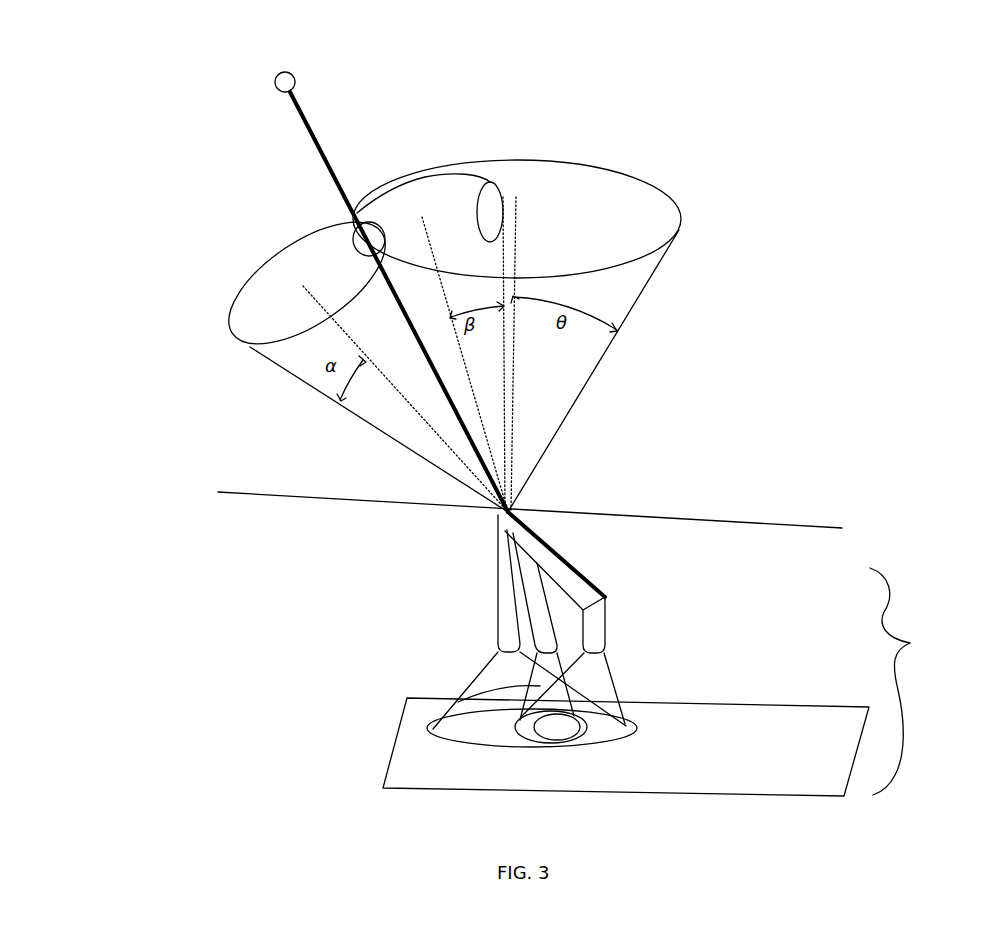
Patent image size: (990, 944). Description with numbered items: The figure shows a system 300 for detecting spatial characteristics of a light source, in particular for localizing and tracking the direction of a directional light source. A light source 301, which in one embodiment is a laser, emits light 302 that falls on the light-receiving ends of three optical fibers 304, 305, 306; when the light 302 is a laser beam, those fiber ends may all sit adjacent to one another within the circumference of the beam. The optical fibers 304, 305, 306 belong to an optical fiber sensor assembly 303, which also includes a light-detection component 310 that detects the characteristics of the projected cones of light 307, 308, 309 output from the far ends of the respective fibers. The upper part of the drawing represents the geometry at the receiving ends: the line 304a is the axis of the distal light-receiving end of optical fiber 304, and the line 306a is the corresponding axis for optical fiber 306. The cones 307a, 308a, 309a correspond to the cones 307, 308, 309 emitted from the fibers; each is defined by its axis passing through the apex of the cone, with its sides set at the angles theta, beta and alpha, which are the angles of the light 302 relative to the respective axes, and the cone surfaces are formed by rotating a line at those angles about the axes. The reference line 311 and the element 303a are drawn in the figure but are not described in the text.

The system 300 is at (897, 127).
The light source 301 is at (295, 77).
The light 302 is at (313, 127).
The optical fiber sensor assembly 303 is at (914, 681).
The detection cone axis 303a is at (426, 224).
The optical fiber 304 is at (500, 593).
The axis 304a is at (400, 262).
The optical fiber 305 is at (540, 613).
The optical fiber 306 is at (587, 583).
The axis 306a is at (312, 295).
The cone of light 307 is at (477, 681).
The cone 307a is at (652, 258).
The cone of light 308 is at (443, 727).
The cone 308a is at (490, 182).
The cone of light 309 is at (608, 674).
The cone 309a is at (272, 360).
The light-detection component 310 is at (385, 775).
The sample plane 311 is at (703, 518).